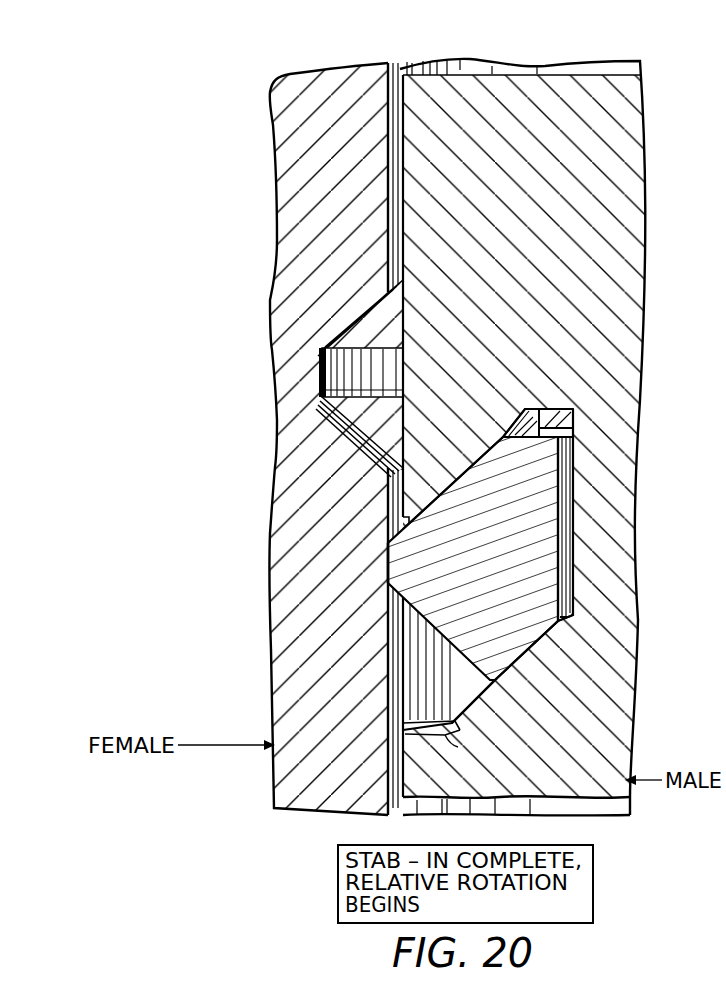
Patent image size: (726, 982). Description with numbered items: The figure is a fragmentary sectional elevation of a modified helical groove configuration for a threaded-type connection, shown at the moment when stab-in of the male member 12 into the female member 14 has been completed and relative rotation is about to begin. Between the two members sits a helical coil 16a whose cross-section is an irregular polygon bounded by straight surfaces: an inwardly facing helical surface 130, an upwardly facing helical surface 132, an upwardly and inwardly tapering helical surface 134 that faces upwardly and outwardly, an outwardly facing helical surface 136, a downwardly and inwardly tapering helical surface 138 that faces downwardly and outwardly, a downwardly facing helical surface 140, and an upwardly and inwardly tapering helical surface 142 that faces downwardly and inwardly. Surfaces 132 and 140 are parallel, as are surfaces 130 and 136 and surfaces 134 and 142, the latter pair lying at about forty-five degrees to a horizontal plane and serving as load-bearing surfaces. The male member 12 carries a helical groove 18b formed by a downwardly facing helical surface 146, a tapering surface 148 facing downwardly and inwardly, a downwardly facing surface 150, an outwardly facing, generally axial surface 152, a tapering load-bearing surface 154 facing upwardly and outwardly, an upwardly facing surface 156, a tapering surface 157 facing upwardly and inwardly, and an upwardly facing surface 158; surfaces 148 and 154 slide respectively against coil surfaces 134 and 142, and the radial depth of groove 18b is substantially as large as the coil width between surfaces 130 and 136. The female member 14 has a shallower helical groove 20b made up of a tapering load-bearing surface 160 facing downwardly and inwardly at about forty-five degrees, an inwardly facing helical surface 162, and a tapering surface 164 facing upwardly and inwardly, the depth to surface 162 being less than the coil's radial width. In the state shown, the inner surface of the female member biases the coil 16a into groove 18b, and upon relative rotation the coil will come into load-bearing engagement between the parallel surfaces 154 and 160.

The male member 12 is at (656, 247).
The female member 14 is at (272, 238).
The helical coil 16a is at (568, 494).
The helical groove 18b is at (585, 418).
The helical groove 20b is at (325, 421).
The inwardly facing helical surface 130 is at (565, 553).
The upwardly facing helical surface 132 is at (539, 409).
The upwardly and inwardly tapering helical surface 134 is at (458, 445).
The outwardly facing helical surface 136 is at (387, 577).
The downwardly and inwardly tapering helical surface 138 is at (456, 672).
The downwardly facing helical surface 140 is at (493, 685).
The upwardly and inwardly tapering helical surface 142 is at (546, 645).
The downwardly facing helical surface 146 is at (404, 514).
The upwardly and inwardly tapering helical surface 148 is at (516, 407).
The downwardly facing helical surface 150 is at (558, 415).
The outwardly facing helical surface 152 is at (572, 582).
The upwardly and inwardly tapering helical surface 154 is at (572, 617).
The upwardly facing helical surface 156 is at (585, 789).
The downwardly and inwardly tapering helical surface 157 is at (412, 740).
The upwardly facing helical surface 158 is at (420, 723).
The upwardly and inwardly tapering helical surface 160 is at (367, 312).
The inwardly facing helical surface 162 is at (322, 378).
The downwardly and inwardly tapering helical surface 164 is at (378, 447).